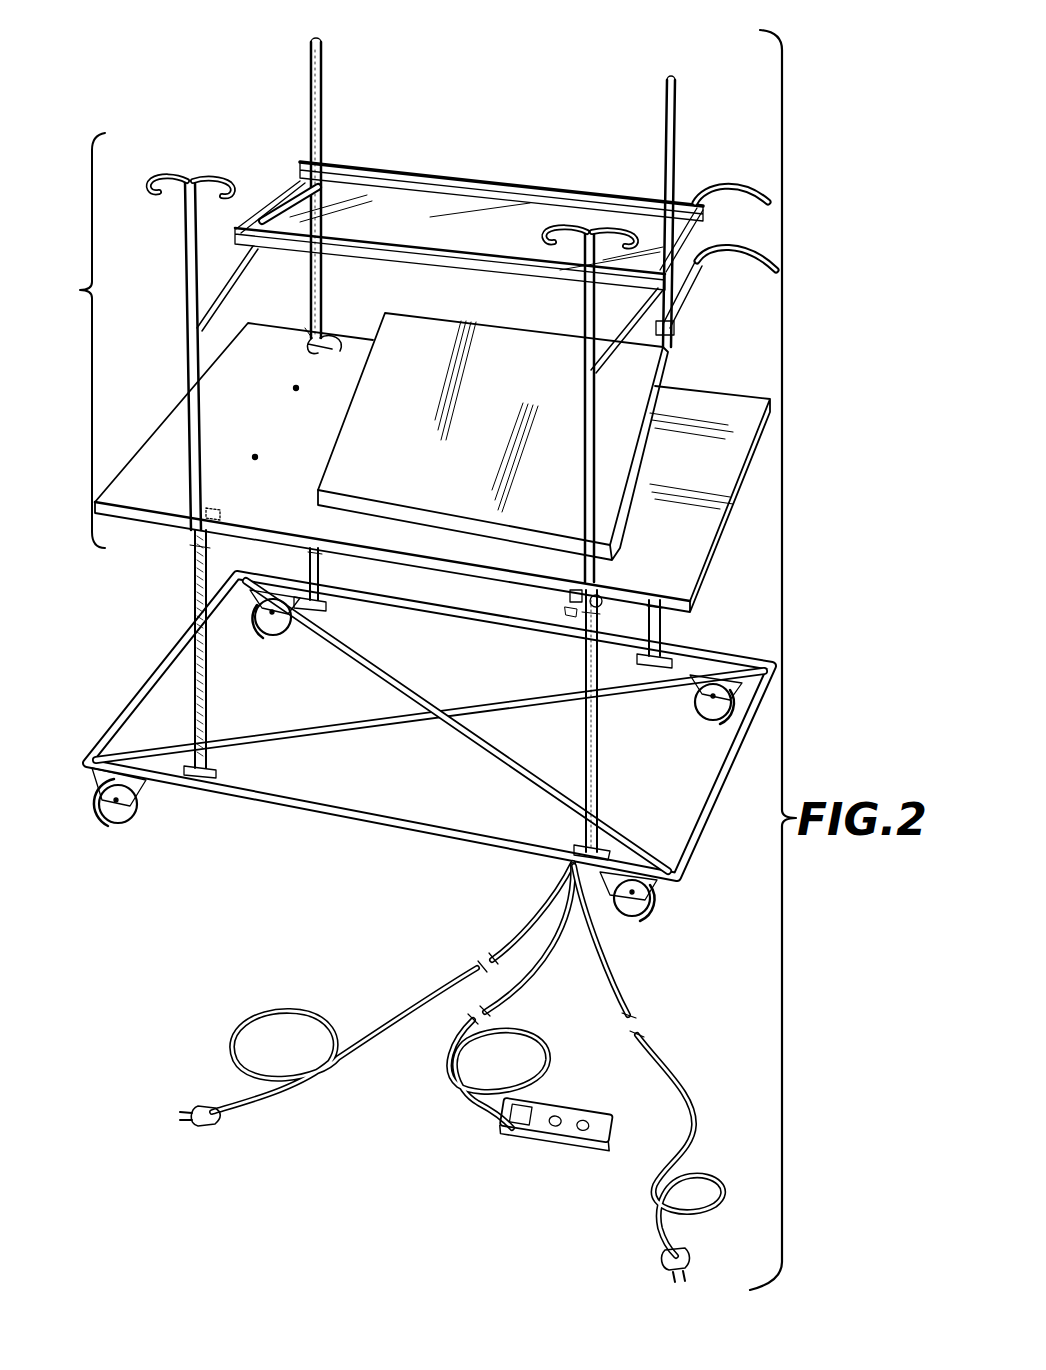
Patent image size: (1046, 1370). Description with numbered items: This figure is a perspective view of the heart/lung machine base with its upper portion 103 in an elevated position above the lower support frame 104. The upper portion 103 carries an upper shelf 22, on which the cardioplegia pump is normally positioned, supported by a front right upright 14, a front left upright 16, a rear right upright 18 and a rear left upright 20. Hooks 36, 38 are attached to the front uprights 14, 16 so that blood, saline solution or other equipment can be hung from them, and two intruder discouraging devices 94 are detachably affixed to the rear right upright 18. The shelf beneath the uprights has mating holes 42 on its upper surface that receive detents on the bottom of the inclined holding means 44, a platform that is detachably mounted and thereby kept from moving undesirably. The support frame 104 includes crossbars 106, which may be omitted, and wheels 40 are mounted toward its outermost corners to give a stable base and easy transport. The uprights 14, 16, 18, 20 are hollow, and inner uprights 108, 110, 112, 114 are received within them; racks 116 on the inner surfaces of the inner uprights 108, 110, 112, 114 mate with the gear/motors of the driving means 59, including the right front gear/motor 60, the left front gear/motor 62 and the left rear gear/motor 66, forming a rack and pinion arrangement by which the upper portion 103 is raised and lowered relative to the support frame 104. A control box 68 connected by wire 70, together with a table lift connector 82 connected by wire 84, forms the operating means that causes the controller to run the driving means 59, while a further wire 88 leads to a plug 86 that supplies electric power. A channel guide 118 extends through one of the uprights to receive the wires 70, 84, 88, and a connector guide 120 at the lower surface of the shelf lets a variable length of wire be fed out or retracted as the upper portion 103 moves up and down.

The front right upright 14 is at (585, 388).
The front left upright 16 is at (187, 358).
The rear right upright 18 is at (677, 138).
The rear left upright 20 is at (323, 118).
The upper shelf 22 is at (365, 233).
The hook 36 is at (572, 226).
The hook 38 is at (232, 158).
The wheels 40 is at (282, 640).
The mating holes 42 is at (258, 455).
The inclined holding means 44 is at (372, 405).
The driving means 59 is at (305, 326).
The right front gear/motor 60 is at (570, 597).
The left front gear/motor 62 is at (197, 536).
The left rear gear/motor 66 is at (346, 339).
The control box 68 is at (590, 1157).
The connection wire 70 is at (500, 1122).
The table lift connector 82 is at (690, 1257).
The wire 84 is at (633, 1014).
The plug 86 is at (207, 1120).
The wire 88 is at (283, 1105).
The intruder discouraging devices 94 is at (708, 179).
The upper portion 103 is at (70, 340).
The lower support frame 104 is at (700, 800).
The crossbars 106 is at (490, 706).
The inner upright 108 is at (580, 714).
The inner upright 110 is at (195, 613).
The inner upright 112 is at (662, 628).
The inner upright 114 is at (310, 567).
The racks 116 is at (316, 565).
The channel guide 118 is at (598, 790).
The connector guide 120 is at (600, 606).